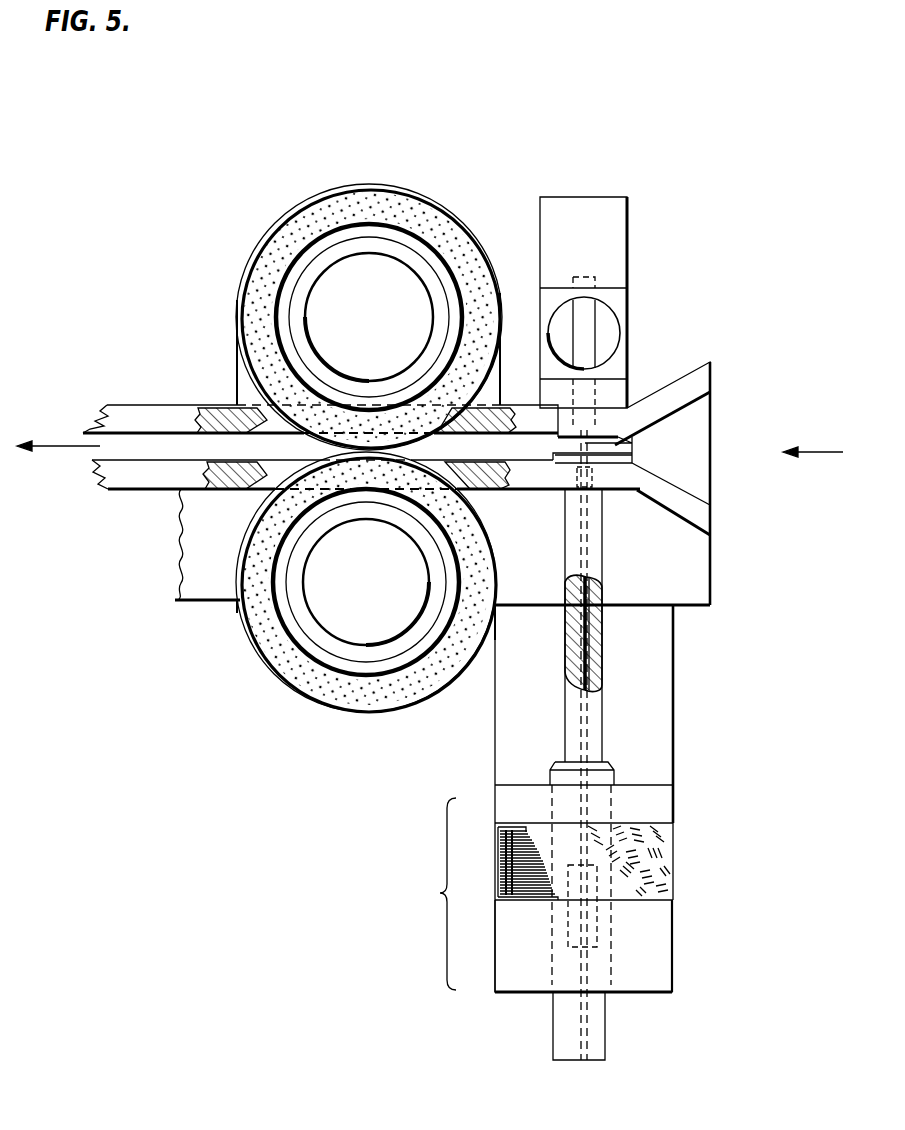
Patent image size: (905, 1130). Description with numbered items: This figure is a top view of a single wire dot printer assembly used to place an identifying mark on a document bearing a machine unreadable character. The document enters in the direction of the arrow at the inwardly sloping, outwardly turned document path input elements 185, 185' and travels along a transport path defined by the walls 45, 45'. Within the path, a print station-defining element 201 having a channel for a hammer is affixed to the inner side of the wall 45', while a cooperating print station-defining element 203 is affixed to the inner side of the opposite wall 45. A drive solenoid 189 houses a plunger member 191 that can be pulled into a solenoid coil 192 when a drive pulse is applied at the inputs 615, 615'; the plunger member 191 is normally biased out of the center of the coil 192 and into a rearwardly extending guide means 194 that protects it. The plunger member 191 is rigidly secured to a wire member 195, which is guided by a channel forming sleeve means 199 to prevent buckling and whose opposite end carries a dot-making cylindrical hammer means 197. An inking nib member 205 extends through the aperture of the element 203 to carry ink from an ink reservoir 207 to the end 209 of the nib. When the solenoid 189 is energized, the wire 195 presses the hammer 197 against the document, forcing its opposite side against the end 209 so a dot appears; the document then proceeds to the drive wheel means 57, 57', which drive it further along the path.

The drive wheel means 57 is at (362, 304).
The drive wheel means 57' is at (335, 582).
The transport path defining wall 45 is at (287, 413).
The transport path defining wall 45' is at (444, 485).
The print station-defining element 203 is at (555, 432).
The ink reservoir 207 is at (640, 305).
The inking nib member 205 is at (595, 375).
The document path input element 185 is at (698, 481).
The document path input element 185' is at (714, 506).
The end of the nib 209 is at (630, 447).
The print station-defining element 201 is at (556, 459).
The dot-making cylindrical hammer means 197 is at (592, 474).
The channel forming sleeve means 199 is at (568, 700).
The wire member 195 is at (590, 650).
The drive solenoid 189 is at (425, 894).
The solenoid coil 192 is at (673, 865).
The coil input 615 is at (634, 859).
The coil input 615' is at (676, 877).
The plunger member 191 is at (597, 925).
The guide means 194 is at (606, 1029).